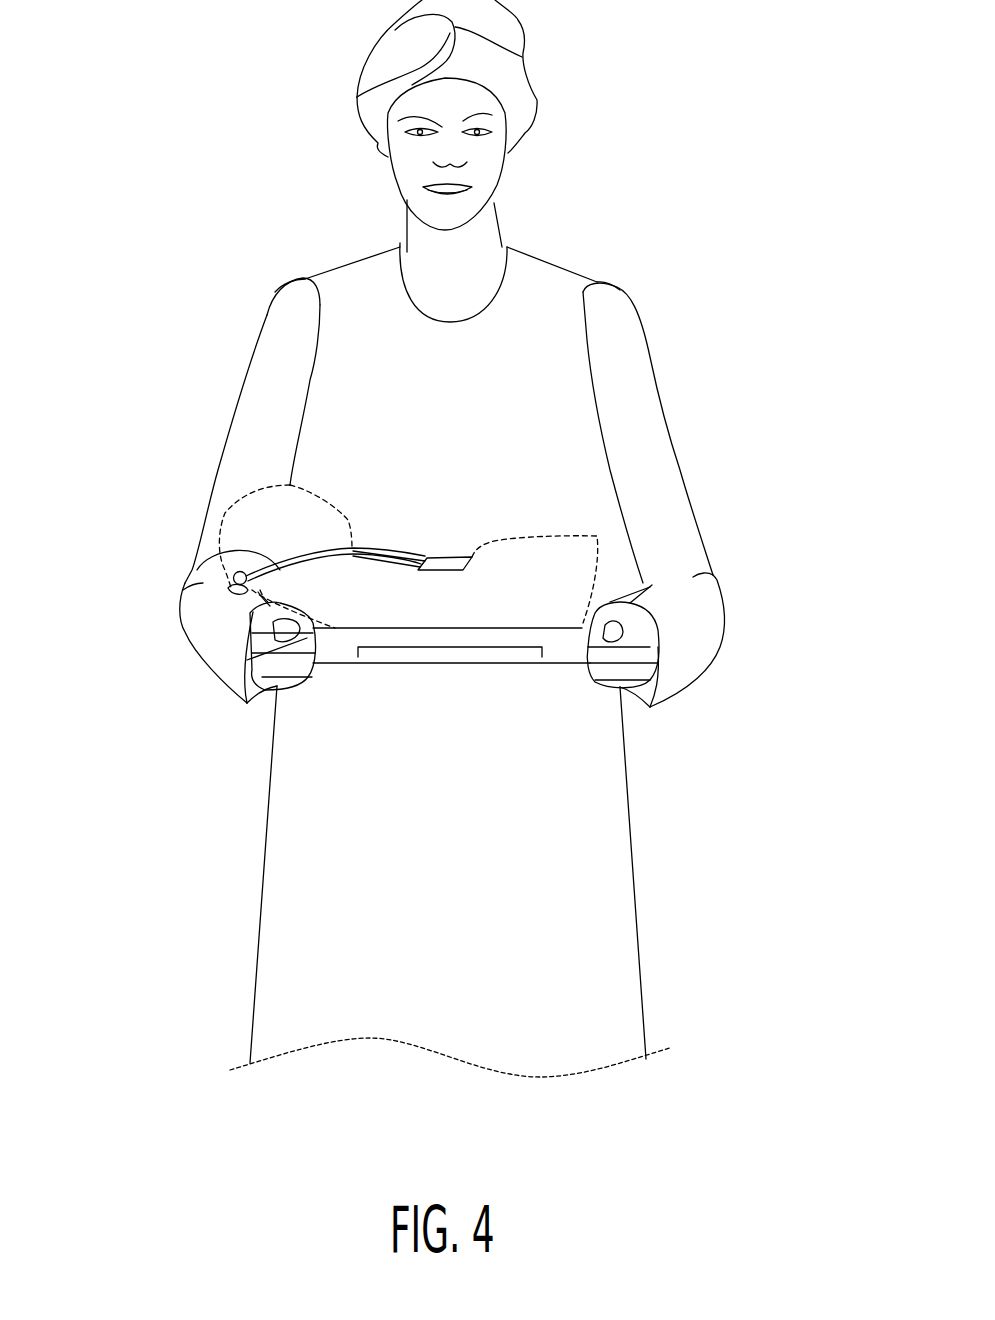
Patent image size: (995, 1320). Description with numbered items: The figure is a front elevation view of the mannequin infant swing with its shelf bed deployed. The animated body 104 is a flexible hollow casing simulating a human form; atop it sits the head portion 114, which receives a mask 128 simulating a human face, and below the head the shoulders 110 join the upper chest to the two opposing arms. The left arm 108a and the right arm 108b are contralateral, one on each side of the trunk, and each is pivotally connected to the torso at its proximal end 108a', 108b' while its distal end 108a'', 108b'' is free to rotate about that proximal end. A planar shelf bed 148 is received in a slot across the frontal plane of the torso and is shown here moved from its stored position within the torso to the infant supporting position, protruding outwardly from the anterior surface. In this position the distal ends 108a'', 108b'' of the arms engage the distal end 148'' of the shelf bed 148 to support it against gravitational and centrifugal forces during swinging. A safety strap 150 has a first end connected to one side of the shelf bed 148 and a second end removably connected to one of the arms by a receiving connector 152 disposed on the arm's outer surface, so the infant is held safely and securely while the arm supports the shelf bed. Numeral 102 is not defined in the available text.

The pocket 102 is at (242, 528).
The animated body 104 is at (540, 420).
The left arm 108a is at (690, 433).
The right arm 108b is at (210, 430).
The proximal end of left arm 108a' is at (672, 283).
The proximal end of right arm 108b' is at (239, 249).
The distal end of left arm 108a'' is at (726, 656).
The distal end of right arm 108b'' is at (165, 645).
The shoulders 110 is at (560, 283).
The head portion 114 is at (517, 72).
The mask 128 is at (493, 180).
The shelf bed 148 is at (522, 745).
The distal end of shelf bed 148'' is at (477, 694).
The safety strap 150 is at (236, 577).
The receiving connector 152 is at (228, 587).